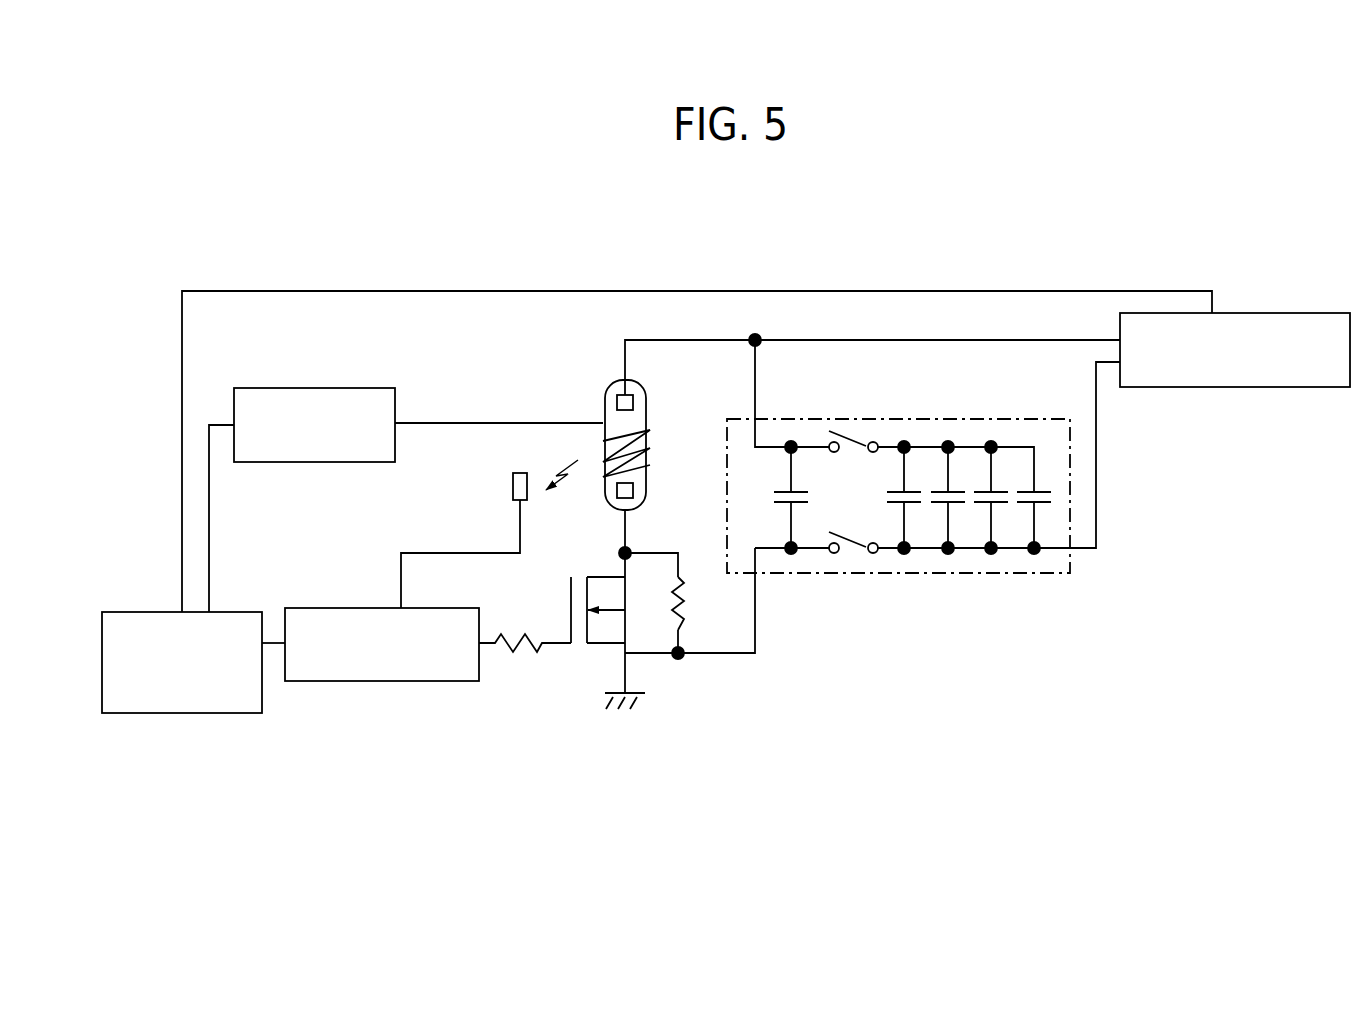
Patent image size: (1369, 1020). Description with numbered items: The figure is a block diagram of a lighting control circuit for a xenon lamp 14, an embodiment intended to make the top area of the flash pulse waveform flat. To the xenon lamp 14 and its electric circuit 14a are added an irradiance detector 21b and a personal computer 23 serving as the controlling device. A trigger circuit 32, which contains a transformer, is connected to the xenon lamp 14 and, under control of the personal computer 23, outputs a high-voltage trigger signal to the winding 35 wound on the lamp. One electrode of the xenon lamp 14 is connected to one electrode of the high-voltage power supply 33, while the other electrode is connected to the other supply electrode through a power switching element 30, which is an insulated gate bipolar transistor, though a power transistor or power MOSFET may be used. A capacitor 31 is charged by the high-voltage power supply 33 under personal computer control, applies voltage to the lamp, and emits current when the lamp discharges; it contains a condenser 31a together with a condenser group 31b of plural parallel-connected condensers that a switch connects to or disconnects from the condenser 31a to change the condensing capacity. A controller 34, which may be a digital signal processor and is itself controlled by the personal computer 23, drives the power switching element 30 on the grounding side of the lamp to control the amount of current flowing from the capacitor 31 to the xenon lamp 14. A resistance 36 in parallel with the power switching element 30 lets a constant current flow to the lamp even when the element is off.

The xenon lamp 14 is at (652, 401).
The electric circuit 14a is at (1117, 553).
The irradiance detector 21b is at (513, 486).
The personal computer 23 is at (148, 612).
The power switching element 30 is at (565, 612).
The capacitor 31 is at (864, 500).
The condenser 31a is at (762, 497).
The condenser group 31b is at (969, 512).
The trigger circuit 32 is at (297, 388).
The high-voltage power supply 33 is at (1247, 313).
The controller 34 is at (367, 607).
The winding 35 is at (622, 432).
The resistance 36 is at (693, 613).